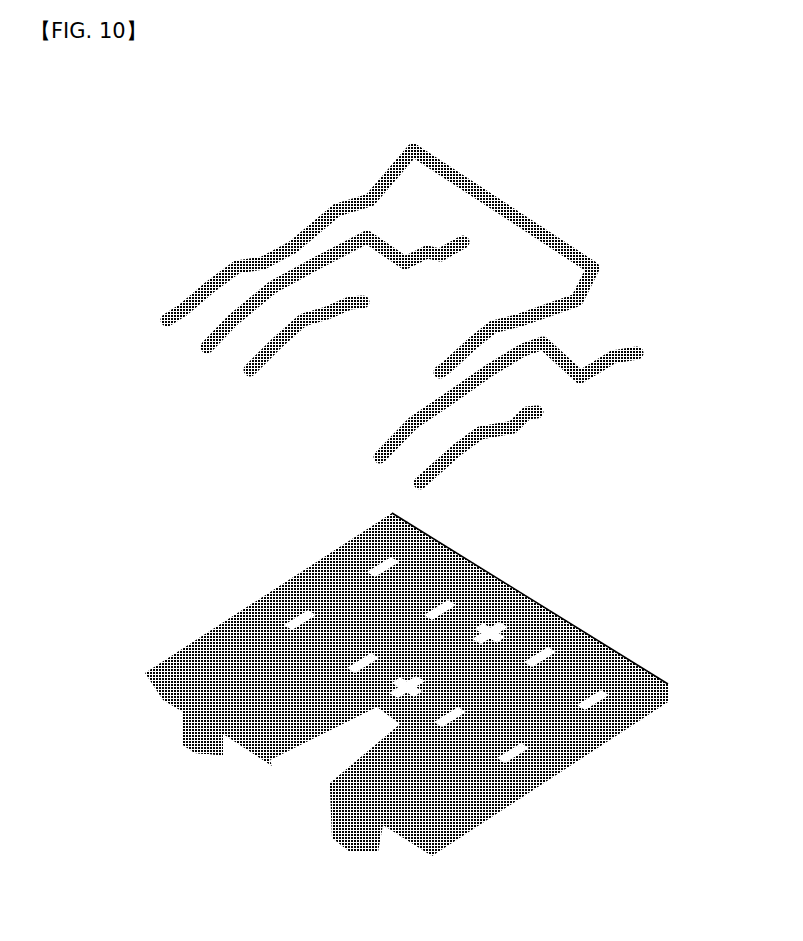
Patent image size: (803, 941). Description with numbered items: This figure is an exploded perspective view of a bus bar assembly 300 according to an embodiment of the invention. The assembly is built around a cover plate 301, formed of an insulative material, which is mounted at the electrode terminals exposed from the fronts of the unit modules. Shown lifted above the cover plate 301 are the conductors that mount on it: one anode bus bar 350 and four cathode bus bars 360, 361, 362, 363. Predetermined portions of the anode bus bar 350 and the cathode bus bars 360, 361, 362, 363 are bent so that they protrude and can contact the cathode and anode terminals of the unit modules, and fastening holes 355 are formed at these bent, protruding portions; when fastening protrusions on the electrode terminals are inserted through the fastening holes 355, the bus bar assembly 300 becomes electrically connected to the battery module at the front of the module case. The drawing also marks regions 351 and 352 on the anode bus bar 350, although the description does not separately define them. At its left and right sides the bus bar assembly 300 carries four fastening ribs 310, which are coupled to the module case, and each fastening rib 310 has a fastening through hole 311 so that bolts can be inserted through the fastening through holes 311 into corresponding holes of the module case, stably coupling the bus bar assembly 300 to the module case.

The bus bar assembly 300 is at (375, 680).
The cover plate 301 is at (612, 640).
The fastening rib 310 is at (153, 761).
The fastening through hole 311 is at (195, 742).
The anode bus bar 350 is at (418, 243).
The terminal contact portion 351 is at (332, 207).
The terminal tab 352 is at (477, 343).
The fastening hole 355 is at (277, 250).
The cathode bus bar 360 is at (213, 348).
The cathode bus bar 361 is at (247, 370).
The cathode bus bar 362 is at (380, 457).
The cathode bus bar 363 is at (540, 417).